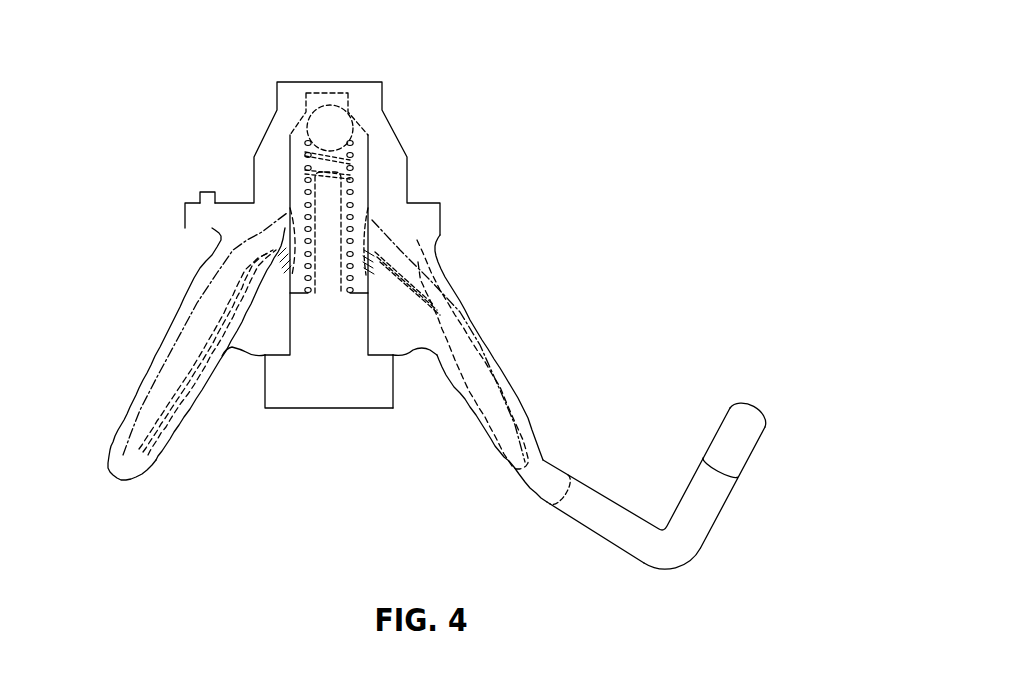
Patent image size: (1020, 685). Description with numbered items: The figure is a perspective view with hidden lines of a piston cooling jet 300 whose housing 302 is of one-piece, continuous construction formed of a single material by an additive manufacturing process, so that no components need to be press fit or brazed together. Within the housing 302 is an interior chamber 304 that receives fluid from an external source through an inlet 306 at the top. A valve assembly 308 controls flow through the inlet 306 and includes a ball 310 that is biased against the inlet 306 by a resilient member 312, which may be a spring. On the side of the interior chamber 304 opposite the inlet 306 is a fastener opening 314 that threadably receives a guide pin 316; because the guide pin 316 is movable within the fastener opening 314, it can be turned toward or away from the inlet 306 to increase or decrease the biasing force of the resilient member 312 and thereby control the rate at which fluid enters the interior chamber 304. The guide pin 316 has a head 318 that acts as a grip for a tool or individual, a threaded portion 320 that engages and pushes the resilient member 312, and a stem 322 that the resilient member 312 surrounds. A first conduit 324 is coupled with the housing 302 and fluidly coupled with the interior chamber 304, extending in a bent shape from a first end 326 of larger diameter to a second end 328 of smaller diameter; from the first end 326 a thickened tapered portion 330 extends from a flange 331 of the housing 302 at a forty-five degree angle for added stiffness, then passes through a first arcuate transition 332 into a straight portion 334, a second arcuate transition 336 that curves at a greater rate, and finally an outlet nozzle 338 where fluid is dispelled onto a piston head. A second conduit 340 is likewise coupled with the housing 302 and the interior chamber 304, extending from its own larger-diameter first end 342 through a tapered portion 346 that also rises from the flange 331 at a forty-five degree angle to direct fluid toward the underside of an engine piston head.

The piston cooling jet 300 is at (489, 90).
The housing 302 is at (390, 135).
The interior chamber 304 is at (297, 183).
The inlet 306 is at (337, 92).
The valve assembly 308 is at (262, 104).
The ball 310 is at (317, 117).
The resilient member 312 is at (350, 163).
The fastener opening 314 is at (283, 360).
The guide pin 316 is at (308, 398).
The head 318 is at (383, 387).
The threaded portion 320 is at (355, 332).
The stem 322 is at (333, 250).
The first conduit 324 is at (580, 493).
The first end 326 is at (367, 220).
The second end 328 is at (739, 411).
The tapered portion 330 is at (432, 270).
The flange 331 is at (197, 213).
The first arcuate transition 332 is at (543, 460).
The straight portion 334 is at (592, 520).
The second arcuate transition 336 is at (680, 562).
The outlet nozzle 338 is at (746, 449).
The second conduit 340 is at (167, 385).
The first end 342 is at (283, 218).
The tapered portion 346 is at (240, 265).